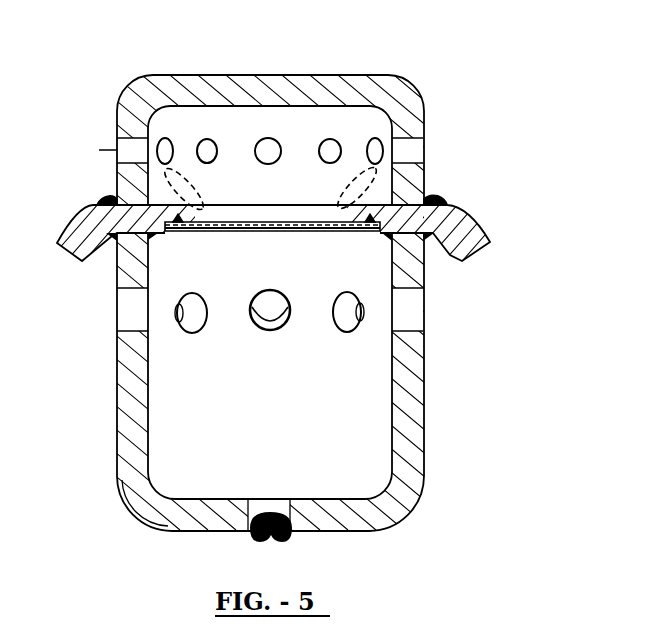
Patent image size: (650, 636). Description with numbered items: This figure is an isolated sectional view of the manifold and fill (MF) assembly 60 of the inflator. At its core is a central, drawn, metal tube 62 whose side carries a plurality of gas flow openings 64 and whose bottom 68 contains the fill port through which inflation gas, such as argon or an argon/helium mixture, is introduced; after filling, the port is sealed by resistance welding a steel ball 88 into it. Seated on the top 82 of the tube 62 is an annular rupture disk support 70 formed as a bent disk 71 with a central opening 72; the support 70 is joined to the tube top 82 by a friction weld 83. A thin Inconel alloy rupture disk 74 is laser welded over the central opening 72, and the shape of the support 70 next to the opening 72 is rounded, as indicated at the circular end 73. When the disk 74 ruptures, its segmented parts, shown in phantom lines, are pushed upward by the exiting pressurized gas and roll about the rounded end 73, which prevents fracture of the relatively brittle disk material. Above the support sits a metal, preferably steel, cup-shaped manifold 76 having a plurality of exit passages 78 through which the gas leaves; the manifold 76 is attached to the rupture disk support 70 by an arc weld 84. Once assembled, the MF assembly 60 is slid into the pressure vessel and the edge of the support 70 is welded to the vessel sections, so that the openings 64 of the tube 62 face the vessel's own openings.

The manifold and fill (MF) assembly 60 is at (420, 88).
The central drawn metal tube 62 is at (420, 414).
The gas flow openings 64 is at (147, 322).
The tube bottom 68 is at (358, 517).
The annular rupture disk support 70 is at (470, 207).
The bent disk 71 is at (480, 229).
The central opening 72 is at (245, 206).
The rounded end of support 73 is at (345, 211).
The rupture disk 74 is at (213, 257).
The cup-shaped manifold 76 is at (140, 72).
The exit passages 78 is at (373, 138).
The tube top 82 is at (133, 252).
The friction weld 83 is at (113, 238).
The arc weld 84 is at (99, 199).
The steel ball 88 is at (250, 536).